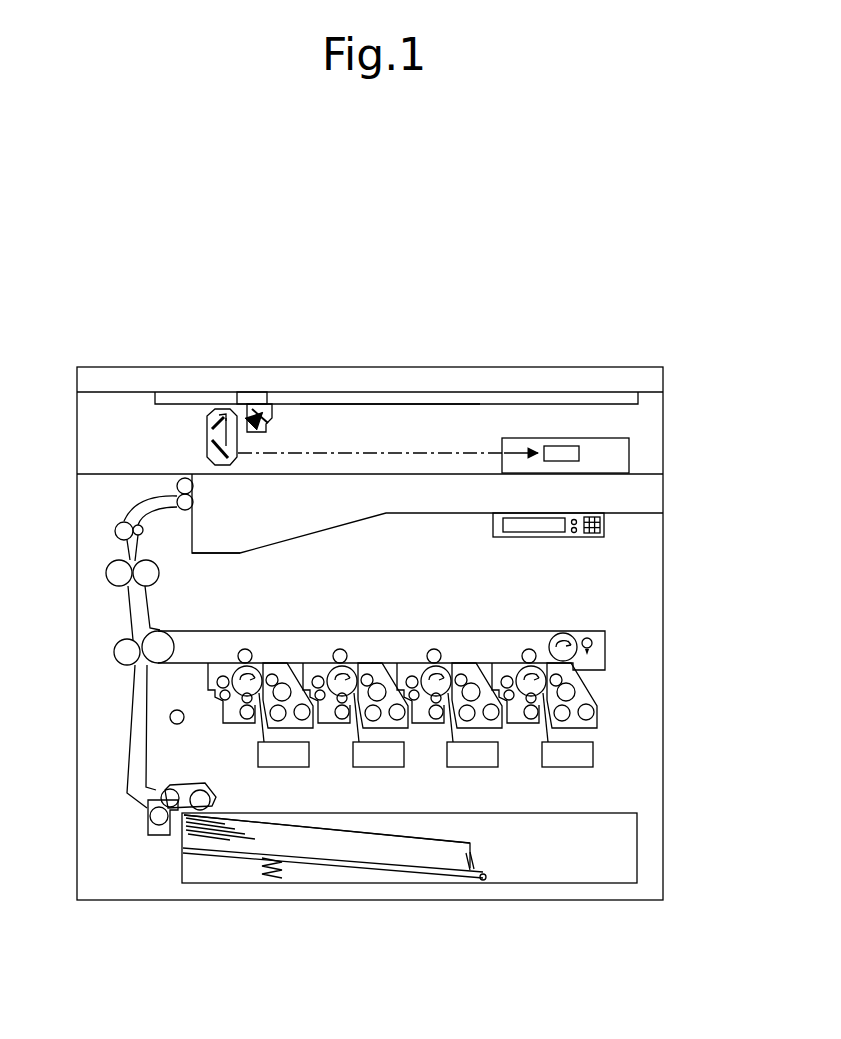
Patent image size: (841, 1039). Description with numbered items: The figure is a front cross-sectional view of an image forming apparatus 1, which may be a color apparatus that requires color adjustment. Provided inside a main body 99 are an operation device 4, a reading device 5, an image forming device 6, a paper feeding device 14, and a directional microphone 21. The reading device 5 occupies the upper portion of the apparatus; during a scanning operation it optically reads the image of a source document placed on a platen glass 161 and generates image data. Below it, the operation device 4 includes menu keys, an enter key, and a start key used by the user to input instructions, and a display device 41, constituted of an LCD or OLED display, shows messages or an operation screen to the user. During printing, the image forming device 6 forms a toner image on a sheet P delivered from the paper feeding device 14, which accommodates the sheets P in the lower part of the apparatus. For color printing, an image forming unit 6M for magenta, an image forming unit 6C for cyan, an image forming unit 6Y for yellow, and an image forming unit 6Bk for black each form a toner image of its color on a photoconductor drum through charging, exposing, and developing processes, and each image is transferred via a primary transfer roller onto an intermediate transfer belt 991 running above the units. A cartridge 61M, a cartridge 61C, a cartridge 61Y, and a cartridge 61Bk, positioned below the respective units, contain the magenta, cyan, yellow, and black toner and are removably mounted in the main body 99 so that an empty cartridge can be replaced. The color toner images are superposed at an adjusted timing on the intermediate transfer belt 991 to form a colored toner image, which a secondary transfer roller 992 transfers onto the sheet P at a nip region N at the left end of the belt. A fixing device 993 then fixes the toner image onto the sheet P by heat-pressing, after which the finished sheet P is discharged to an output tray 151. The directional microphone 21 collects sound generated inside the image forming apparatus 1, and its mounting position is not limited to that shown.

The image forming apparatus 1 is at (641, 325).
The reading device 5 is at (663, 425).
The platen glass 161 is at (521, 403).
The main body 99 is at (663, 513).
The output tray 151 is at (233, 552).
The operation device 4 is at (604, 528).
The display device 41 is at (553, 522).
The fixing device 993 is at (106, 567).
The nip region N is at (133, 641).
The secondary transfer roller 992 is at (171, 646).
The image forming device 6 is at (619, 668).
The intermediate transfer belt 991 is at (560, 636).
The image forming unit for black 6Bk is at (259, 650).
The image forming unit for yellow 6Y is at (341, 643).
The image forming unit for cyan 6C is at (447, 652).
The image forming unit for magenta 6M is at (533, 641).
The cartridge for black toner 61Bk is at (313, 727).
The cartridge for yellow toner 61Y is at (408, 727).
The cartridge for cyan toner 61C is at (502, 727).
The cartridge for magenta toner 61M is at (597, 727).
The directional microphone 21 is at (180, 724).
The paper feeding device 14 is at (637, 865).
The sheet P is at (455, 838).